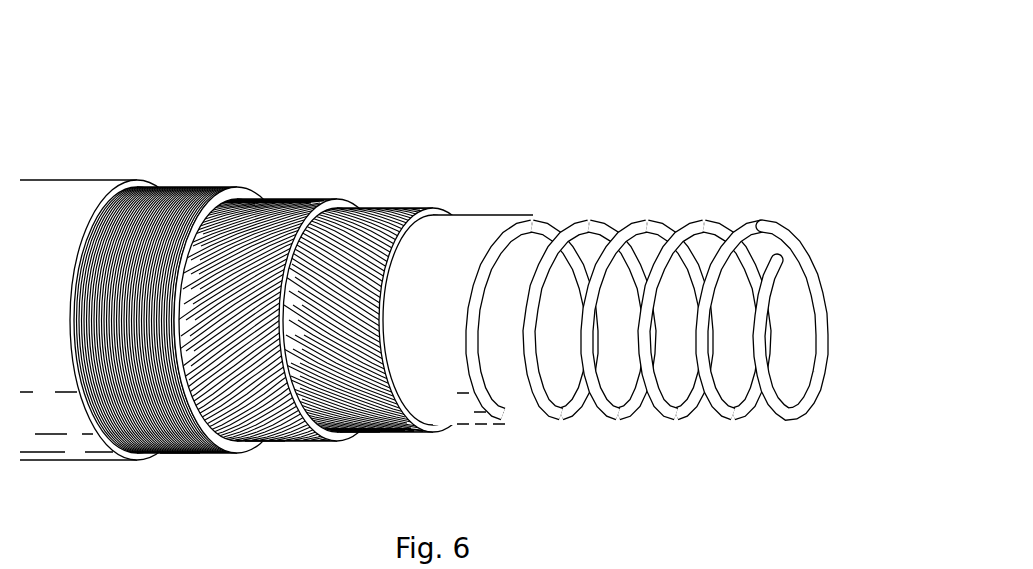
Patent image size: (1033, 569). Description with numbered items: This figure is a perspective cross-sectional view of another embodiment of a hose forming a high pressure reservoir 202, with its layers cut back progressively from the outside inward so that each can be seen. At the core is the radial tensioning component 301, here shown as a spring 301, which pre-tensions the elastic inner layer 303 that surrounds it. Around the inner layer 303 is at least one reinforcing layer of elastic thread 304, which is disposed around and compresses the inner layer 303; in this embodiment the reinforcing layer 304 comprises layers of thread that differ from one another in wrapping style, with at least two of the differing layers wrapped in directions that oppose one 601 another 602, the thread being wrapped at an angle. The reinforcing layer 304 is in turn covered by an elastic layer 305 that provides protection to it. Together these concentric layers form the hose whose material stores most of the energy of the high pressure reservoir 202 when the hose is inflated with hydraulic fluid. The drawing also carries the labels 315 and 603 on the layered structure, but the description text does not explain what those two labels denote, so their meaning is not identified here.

The high pressure reservoir 202 is at (153, 46).
The radial tensioning component 301 is at (633, 227).
The elastic inner layer 303 is at (470, 226).
The reinforcing layer of elastic thread 304 is at (315, 168).
The elastic layer 305 is at (59, 188).
The intermediate layer 315 is at (378, 227).
The thread layer wrapped in one direction 601 is at (352, 440).
The thread layer wrapped in the opposing direction 602 is at (263, 443).
The edge of outer jacket 603 is at (177, 450).